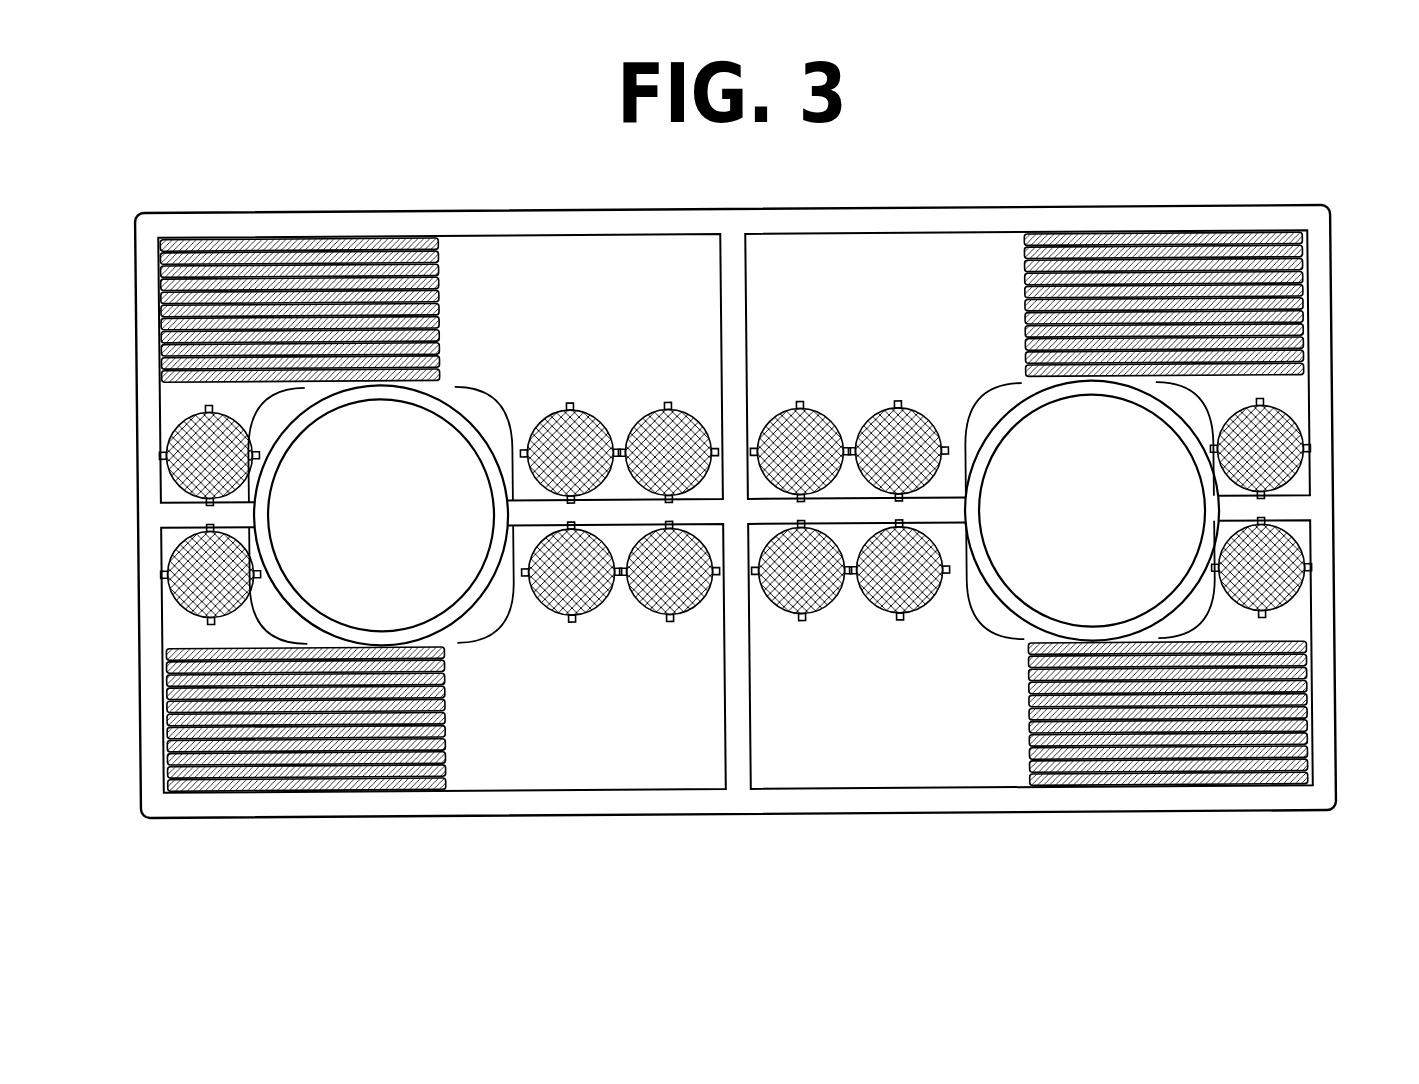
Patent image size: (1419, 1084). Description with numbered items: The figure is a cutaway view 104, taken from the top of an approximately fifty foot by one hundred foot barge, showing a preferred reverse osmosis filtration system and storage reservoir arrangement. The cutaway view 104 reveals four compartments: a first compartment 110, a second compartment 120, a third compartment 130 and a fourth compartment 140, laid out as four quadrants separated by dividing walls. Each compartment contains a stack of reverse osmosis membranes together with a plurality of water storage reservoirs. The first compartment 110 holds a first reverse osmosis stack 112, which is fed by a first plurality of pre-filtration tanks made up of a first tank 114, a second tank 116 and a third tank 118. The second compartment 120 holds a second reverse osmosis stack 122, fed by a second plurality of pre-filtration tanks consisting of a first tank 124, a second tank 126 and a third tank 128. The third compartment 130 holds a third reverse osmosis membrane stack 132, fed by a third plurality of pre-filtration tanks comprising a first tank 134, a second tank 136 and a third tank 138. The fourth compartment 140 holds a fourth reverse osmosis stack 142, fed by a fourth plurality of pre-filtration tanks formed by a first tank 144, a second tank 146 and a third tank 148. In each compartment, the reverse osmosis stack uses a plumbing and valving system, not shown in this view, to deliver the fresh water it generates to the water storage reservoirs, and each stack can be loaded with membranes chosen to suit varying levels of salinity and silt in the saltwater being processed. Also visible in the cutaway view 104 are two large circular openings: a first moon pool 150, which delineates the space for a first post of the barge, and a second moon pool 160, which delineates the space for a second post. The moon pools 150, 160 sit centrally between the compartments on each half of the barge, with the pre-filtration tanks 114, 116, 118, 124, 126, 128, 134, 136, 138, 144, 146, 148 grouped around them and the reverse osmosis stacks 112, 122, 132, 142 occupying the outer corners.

The cutaway view 104 is at (330, 213).
The first compartment 110 is at (510, 745).
The first reverse osmosis stack 112 is at (183, 790).
The first tank 114 is at (180, 595).
The second tank 116 is at (535, 603).
The third tank 118 is at (650, 617).
The second compartment 120 is at (915, 745).
The second reverse osmosis stack 122 is at (1282, 785).
The first tank 124 is at (786, 618).
The second tank 126 is at (882, 623).
The third tank 128 is at (1297, 560).
The third compartment 130 is at (640, 285).
The third reverse osmosis membrane stack 132 is at (185, 245).
The first tank 134 is at (180, 437).
The second tank 136 is at (540, 422).
The third tank 138 is at (648, 410).
The fourth compartment 140 is at (845, 278).
The fourth reverse osmosis stack 142 is at (1282, 240).
The first tank 144 is at (909, 385).
The second tank 146 is at (994, 385).
The third tank 148 is at (1288, 427).
The first moon pool 150 is at (455, 398).
The second moon pool 160 is at (992, 600).